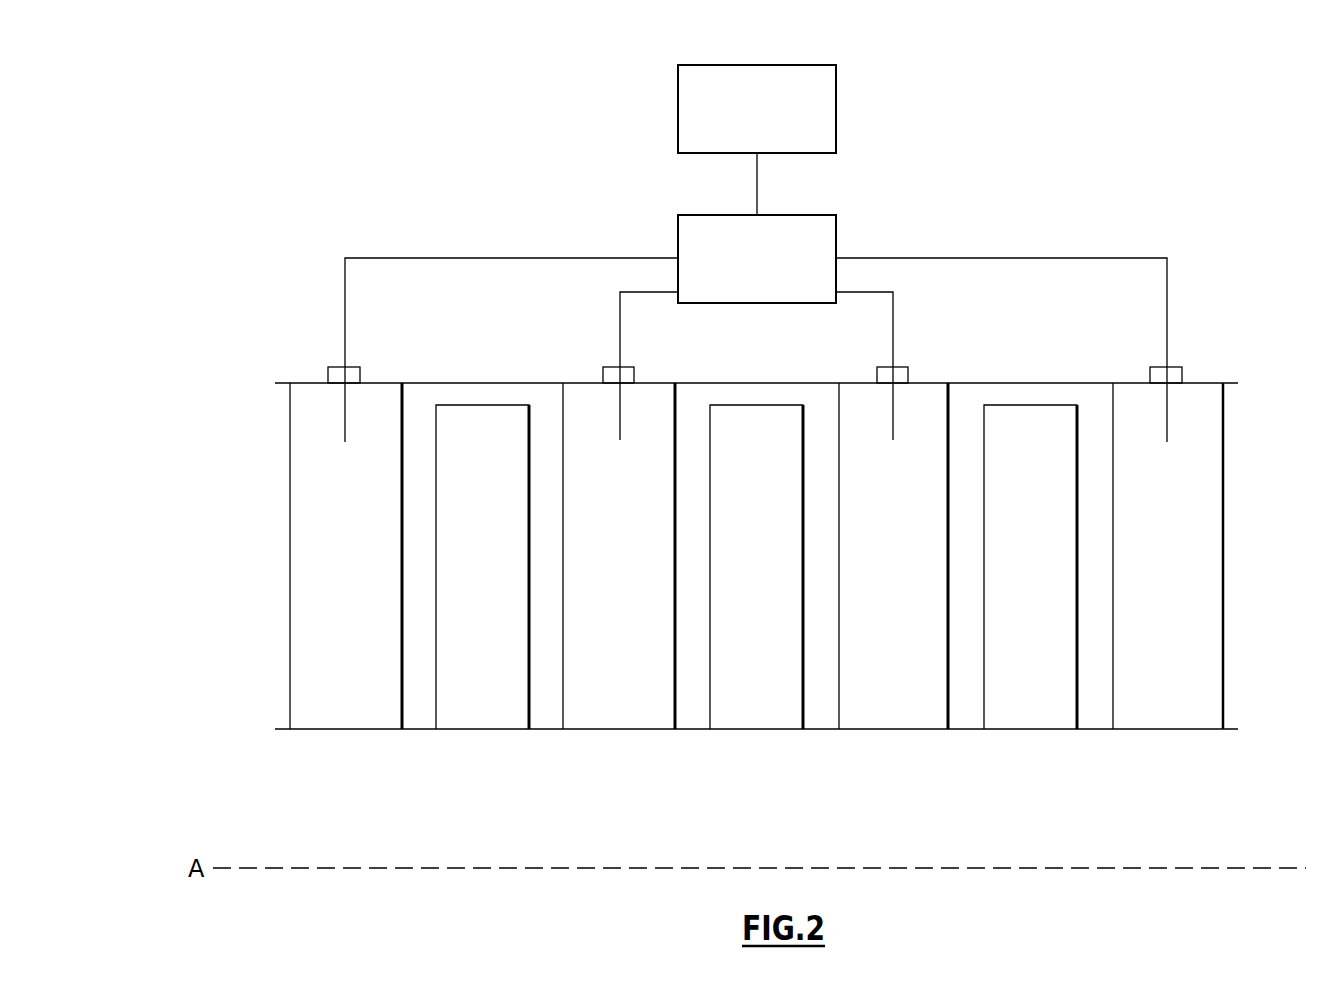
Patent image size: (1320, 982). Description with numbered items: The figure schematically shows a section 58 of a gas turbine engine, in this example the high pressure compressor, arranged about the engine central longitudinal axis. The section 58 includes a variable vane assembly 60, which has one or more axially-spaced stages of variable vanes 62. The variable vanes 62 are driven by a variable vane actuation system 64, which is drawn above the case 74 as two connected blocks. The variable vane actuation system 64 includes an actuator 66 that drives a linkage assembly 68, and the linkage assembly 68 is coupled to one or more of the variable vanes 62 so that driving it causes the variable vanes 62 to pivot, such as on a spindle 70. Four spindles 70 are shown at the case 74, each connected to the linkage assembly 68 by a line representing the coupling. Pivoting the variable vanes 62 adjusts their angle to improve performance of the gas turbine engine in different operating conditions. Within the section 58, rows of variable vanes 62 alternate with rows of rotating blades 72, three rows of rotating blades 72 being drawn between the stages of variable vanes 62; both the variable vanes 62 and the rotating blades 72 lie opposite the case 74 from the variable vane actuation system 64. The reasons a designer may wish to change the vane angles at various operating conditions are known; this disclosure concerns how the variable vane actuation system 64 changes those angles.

The section 58 is at (198, 96).
The variable vane assembly 60 is at (699, 553).
The variable vanes 62 is at (317, 712).
The variable vane actuation system 64 is at (506, 178).
The actuator 66 is at (836, 92).
The linkage assembly 68 is at (836, 243).
The spindle 70 is at (350, 379).
The rotating blades 72 is at (486, 712).
The case 74 is at (290, 383).